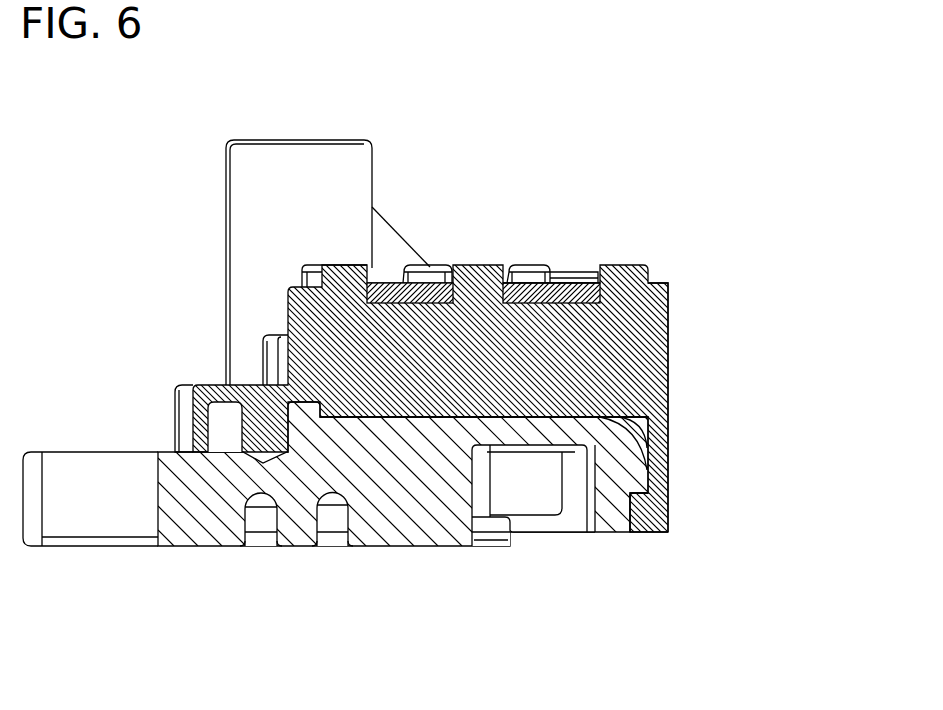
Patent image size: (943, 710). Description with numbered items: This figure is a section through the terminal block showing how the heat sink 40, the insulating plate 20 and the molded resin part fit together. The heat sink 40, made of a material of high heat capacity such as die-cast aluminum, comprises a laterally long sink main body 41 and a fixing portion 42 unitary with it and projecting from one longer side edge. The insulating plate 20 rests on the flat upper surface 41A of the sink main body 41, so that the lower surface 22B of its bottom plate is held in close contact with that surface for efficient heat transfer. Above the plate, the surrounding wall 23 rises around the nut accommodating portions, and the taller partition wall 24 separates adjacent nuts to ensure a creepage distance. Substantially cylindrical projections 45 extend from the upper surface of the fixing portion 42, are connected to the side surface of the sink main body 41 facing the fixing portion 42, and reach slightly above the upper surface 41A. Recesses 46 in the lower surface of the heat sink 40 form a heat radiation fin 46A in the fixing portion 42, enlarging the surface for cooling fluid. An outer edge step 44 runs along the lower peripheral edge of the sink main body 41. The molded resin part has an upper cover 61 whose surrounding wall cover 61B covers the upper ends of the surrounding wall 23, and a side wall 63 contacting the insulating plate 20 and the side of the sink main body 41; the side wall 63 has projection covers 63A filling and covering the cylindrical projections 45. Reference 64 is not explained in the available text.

The insulating plate 20 is at (655, 310).
The lower surface of the bottom plate 22B is at (655, 450).
The surrounding wall 23 is at (534, 278).
The partition wall 24 is at (430, 267).
The heat sink 40 is at (457, 560).
The sink main body 41 is at (640, 482).
The upper surface of the sink main body 41A is at (420, 412).
The fixing portion 42 is at (98, 525).
The outer edge step 44 is at (650, 507).
The cylindrical projection 45 is at (220, 430).
The recess 46 is at (342, 535).
The heat radiation fin 46A is at (292, 540).
The upper cover 61 is at (583, 232).
The surrounding wall cover 61B is at (578, 293).
The side wall 63 is at (298, 298).
The projection cover 63A is at (253, 388).
The locking portion 64 is at (650, 530).